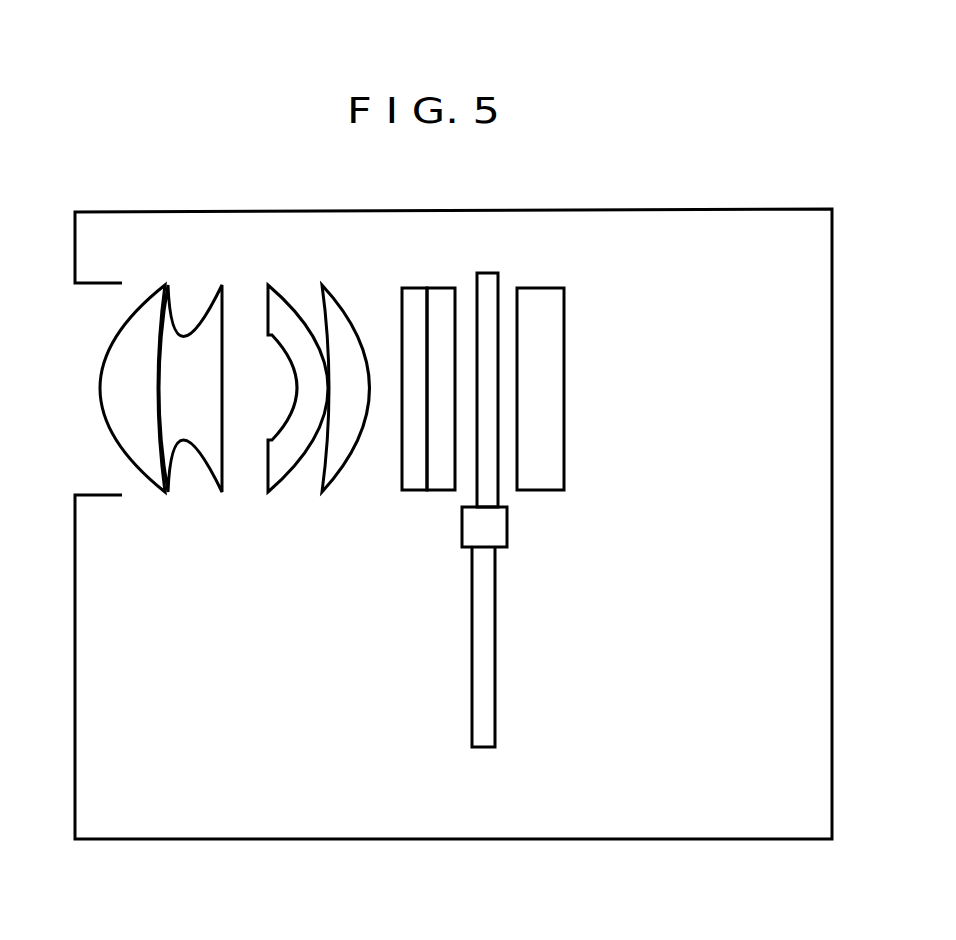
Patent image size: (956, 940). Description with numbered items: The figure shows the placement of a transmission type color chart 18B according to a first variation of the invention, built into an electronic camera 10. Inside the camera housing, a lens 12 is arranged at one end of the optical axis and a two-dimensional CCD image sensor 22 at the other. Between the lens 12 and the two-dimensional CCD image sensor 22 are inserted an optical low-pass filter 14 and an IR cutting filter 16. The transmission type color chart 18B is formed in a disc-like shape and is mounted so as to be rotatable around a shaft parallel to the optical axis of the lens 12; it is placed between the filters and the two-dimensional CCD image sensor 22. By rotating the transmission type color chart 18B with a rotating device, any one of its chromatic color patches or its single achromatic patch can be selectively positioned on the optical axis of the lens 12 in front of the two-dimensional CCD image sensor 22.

The electronic camera 10 is at (468, 839).
The lens 12 is at (342, 513).
The optical low-pass filter 14 is at (407, 495).
The IR cutting filter 16 is at (437, 495).
The transmission type color chart 18B is at (490, 660).
The two-dimensional CCD image sensor 22 is at (553, 303).